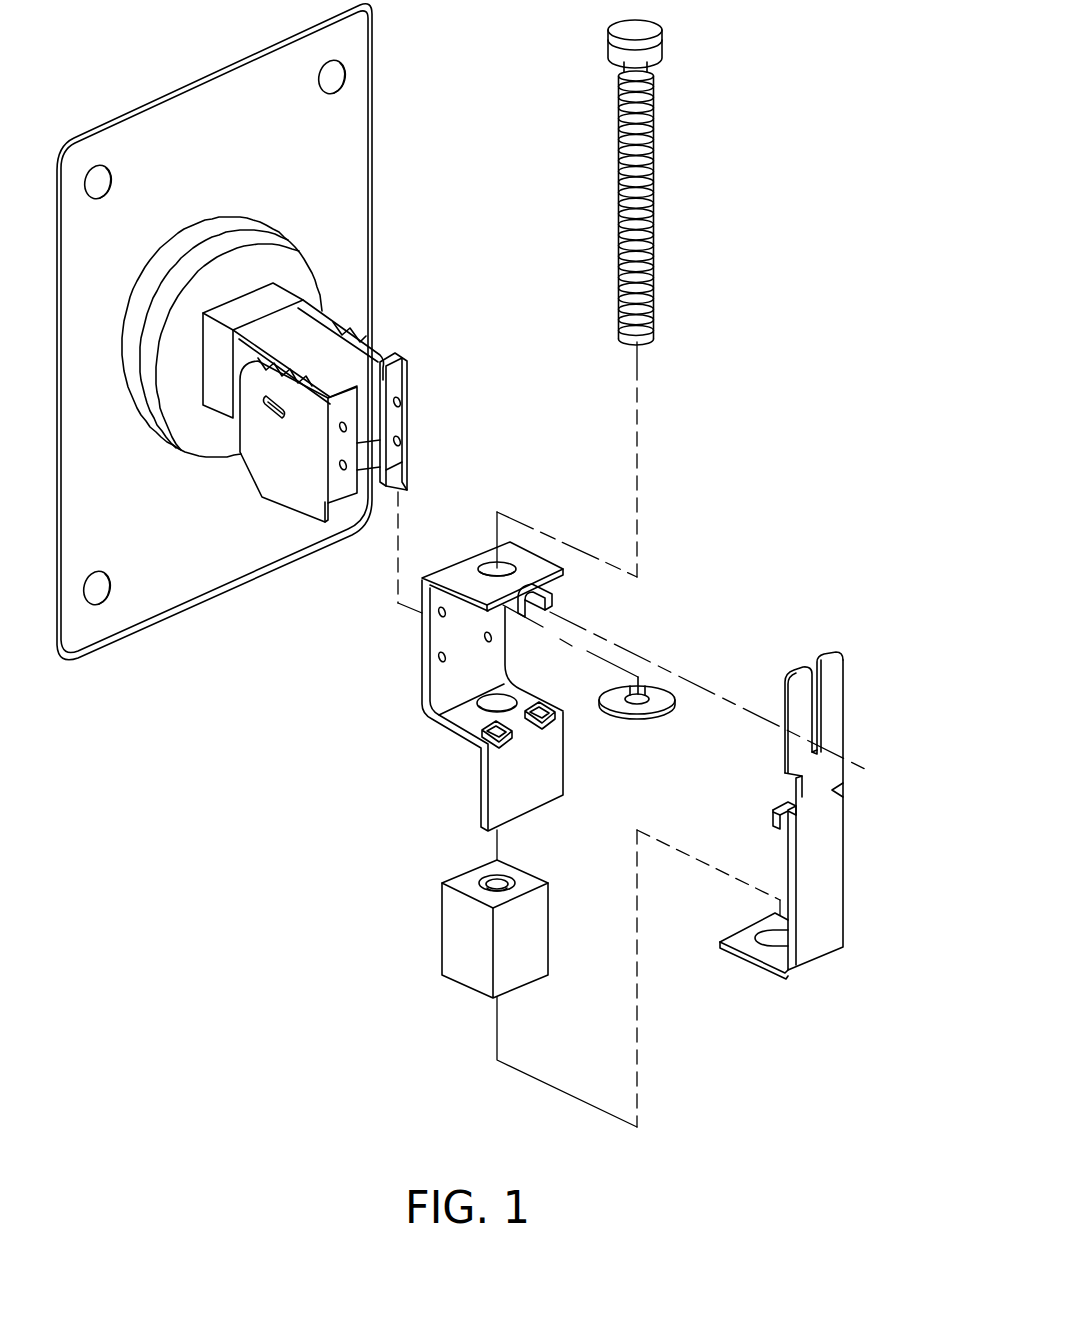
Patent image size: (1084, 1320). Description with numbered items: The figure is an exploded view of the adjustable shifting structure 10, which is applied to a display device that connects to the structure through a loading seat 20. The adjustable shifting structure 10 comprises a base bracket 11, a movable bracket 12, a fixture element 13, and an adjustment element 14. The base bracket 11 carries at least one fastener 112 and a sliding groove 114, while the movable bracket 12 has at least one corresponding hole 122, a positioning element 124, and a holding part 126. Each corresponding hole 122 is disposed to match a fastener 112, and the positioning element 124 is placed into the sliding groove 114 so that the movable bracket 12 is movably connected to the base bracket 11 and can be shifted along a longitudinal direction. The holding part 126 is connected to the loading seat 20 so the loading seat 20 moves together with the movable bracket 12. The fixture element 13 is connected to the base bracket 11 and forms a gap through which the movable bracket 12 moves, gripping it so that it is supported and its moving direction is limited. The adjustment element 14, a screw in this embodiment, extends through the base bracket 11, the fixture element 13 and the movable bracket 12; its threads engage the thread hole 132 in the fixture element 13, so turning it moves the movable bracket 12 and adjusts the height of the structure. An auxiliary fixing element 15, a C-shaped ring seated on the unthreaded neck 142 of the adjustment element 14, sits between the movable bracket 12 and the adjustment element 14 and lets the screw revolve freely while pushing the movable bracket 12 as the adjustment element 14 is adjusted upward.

The adjustable shifting structure 10 is at (845, 262).
The base bracket 11 is at (831, 815).
The fastener 112 is at (800, 820).
The sliding groove 114 is at (817, 703).
The movable bracket 12 is at (517, 686).
The corresponding hole 122 is at (538, 717).
The positioning element 124 is at (552, 607).
The holding part 126 is at (445, 637).
The fixture element 13 is at (516, 943).
The thread hole 132 is at (505, 880).
The adjustment element 14 is at (678, 182).
The neck 142 is at (640, 68).
The auxiliary fixing element 15 is at (660, 698).
The loading seat 20 is at (287, 470).